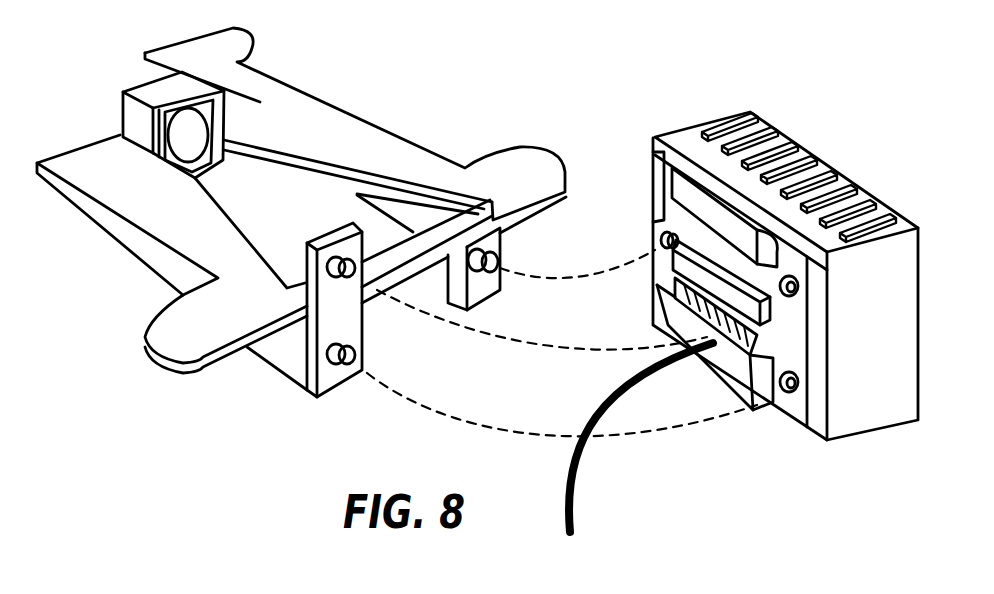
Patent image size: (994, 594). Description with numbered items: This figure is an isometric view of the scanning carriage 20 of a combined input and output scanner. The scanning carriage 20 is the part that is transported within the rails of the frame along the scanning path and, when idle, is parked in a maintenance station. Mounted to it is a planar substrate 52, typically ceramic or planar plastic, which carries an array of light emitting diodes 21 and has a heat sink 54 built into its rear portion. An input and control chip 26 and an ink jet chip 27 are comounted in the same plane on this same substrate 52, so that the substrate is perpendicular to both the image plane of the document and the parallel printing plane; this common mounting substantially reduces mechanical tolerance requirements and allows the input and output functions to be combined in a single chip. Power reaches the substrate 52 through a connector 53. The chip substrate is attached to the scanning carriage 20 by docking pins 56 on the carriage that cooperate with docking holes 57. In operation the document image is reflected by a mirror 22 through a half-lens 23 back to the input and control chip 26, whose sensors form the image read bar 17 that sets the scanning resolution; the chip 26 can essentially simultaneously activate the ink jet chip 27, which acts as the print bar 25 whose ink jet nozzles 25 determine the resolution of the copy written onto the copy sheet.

The image read bar 17 is at (768, 257).
The scanning carriage 20 is at (148, 245).
The array of light emitting diodes 21 is at (685, 195).
The mirror 22 is at (393, 233).
The half-lens 23 is at (198, 140).
The print bar 25 is at (753, 345).
The input and control chip 26 is at (662, 270).
The ink jet chip 27 is at (725, 381).
The substrate 52 is at (675, 138).
The connector 53 is at (652, 177).
The heat sink 54 is at (820, 162).
The docking pins 56 is at (350, 372).
The docking holes 57 is at (786, 394).